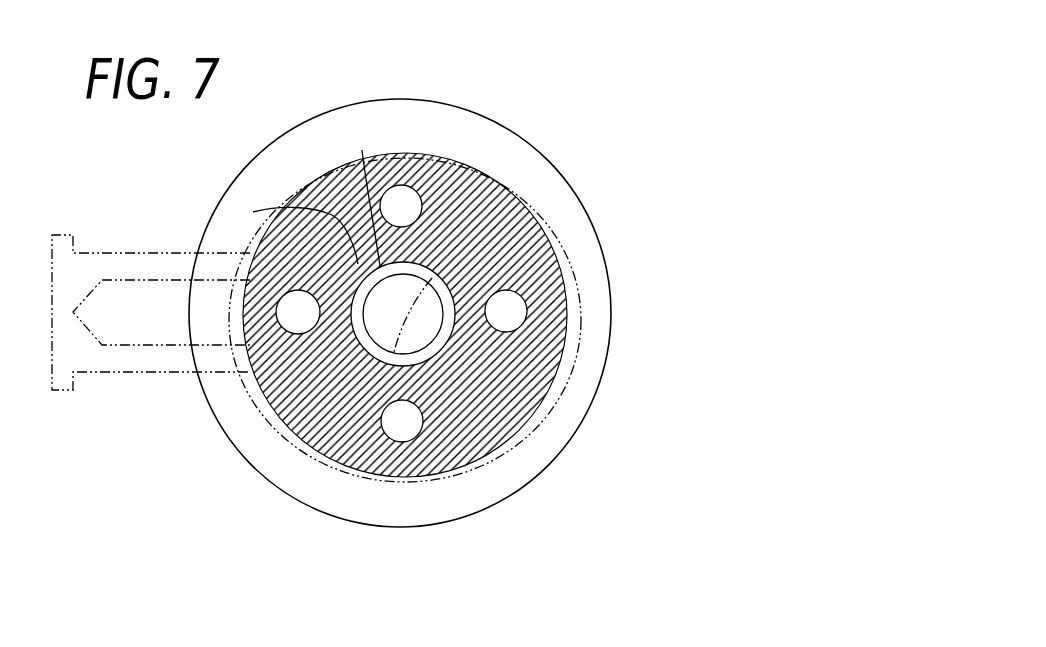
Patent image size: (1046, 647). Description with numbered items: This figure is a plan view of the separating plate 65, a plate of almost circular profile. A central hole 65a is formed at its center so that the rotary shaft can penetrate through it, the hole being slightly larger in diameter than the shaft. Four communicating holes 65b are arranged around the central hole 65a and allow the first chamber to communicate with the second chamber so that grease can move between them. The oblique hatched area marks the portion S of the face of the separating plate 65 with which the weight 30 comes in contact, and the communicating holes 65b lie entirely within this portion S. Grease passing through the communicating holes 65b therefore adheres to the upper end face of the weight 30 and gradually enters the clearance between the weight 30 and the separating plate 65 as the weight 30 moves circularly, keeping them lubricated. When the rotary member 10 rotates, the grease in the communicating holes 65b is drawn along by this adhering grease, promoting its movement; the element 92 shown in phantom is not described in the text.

The rotary member 10 is at (605, 320).
The weight 30 is at (365, 152).
The separating plate 65 is at (600, 246).
The central hole 65a is at (382, 320).
The communicating holes 65b is at (407, 224).
The drive shaft 92 is at (152, 373).
The portion S is at (400, 480).